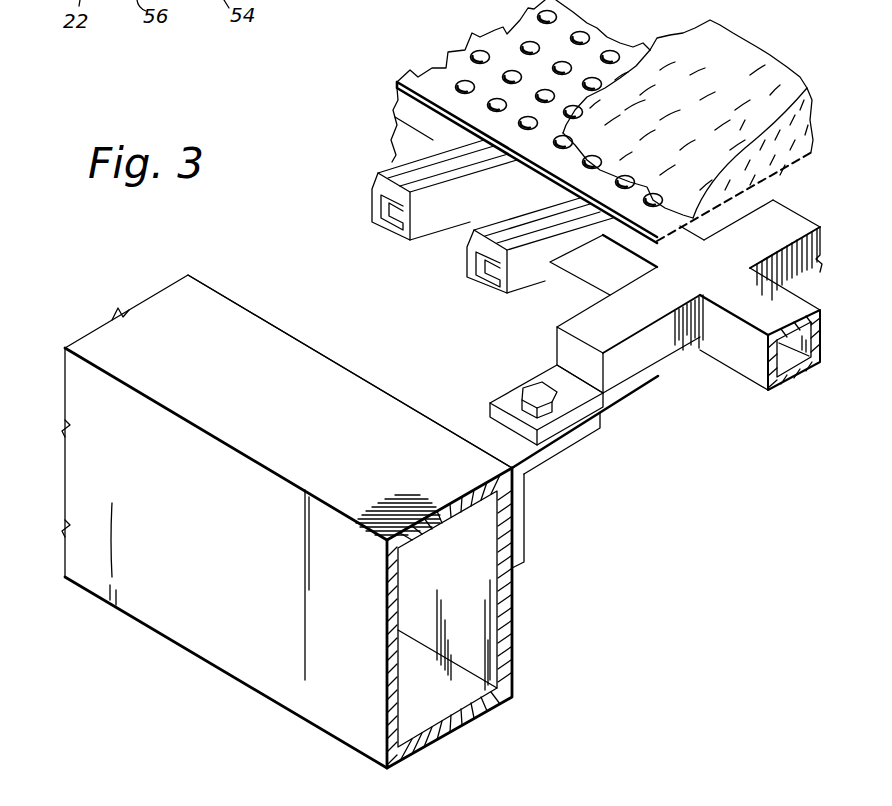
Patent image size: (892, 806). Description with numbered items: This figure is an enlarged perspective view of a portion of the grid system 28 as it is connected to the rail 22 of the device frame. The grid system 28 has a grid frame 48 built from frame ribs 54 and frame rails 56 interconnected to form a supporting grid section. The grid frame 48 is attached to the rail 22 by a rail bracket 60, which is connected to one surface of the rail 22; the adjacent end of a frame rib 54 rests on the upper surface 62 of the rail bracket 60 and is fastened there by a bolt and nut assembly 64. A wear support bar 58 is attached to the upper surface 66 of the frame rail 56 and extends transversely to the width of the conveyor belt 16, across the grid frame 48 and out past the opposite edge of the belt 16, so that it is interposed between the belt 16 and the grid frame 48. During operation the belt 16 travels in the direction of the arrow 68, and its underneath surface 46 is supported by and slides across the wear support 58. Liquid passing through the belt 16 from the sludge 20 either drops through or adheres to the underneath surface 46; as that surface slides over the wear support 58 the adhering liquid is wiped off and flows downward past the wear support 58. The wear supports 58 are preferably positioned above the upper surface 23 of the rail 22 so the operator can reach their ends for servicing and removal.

The conveyor belt 16 is at (413, 77).
The sludge 20 is at (773, 68).
The rail 22 is at (228, 567).
The upper surface of rail 23 is at (215, 302).
The grid system 28 is at (679, 312).
The underneath surface of conveyor belt 46 is at (398, 93).
The grid frame 48 is at (806, 213).
The frame rib 54 is at (655, 354).
The frame rail 56 is at (768, 322).
The wear support bar 58 is at (375, 180).
The rail bracket 60 is at (528, 533).
The upper surface of rail bracket 62 is at (580, 432).
The bolt and nut assembly 64 is at (528, 387).
The upper surface of frame rail 66 is at (618, 245).
The arrow 68 is at (655, 265).